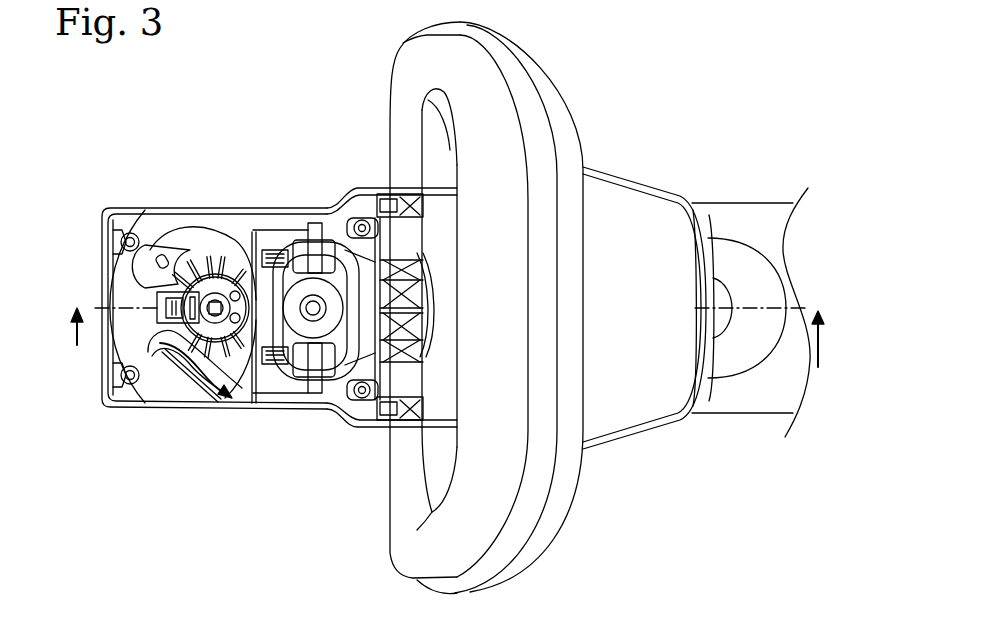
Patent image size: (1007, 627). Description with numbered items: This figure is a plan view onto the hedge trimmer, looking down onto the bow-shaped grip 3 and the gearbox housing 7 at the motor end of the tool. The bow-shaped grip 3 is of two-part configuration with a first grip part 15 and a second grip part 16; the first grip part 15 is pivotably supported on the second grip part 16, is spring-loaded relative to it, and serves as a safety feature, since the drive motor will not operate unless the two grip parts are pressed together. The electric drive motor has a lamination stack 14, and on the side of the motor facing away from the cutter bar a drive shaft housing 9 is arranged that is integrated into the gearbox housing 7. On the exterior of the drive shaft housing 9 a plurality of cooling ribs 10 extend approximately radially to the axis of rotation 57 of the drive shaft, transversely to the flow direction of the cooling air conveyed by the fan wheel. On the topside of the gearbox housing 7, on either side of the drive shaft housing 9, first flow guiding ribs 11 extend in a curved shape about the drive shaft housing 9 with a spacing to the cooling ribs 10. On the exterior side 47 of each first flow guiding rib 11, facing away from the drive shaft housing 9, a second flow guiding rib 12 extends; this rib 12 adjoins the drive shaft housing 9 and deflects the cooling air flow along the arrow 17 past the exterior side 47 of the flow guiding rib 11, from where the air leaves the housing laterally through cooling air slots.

The bow-shaped grip 3 is at (444, 308).
The gearbox housing 7 is at (133, 293).
The drive shaft housing 9 is at (220, 305).
The cooling ribs 10 is at (222, 263).
The first flow guiding ribs 11 is at (162, 262).
The second flow guiding ribs 12 is at (135, 266).
The lamination stack 14 is at (338, 327).
The first grip part 15 is at (417, 63).
The second grip part 16 is at (543, 100).
The arrow 17 is at (204, 390).
The exterior side 47 is at (215, 240).
The axis of rotation 57 is at (216, 312).